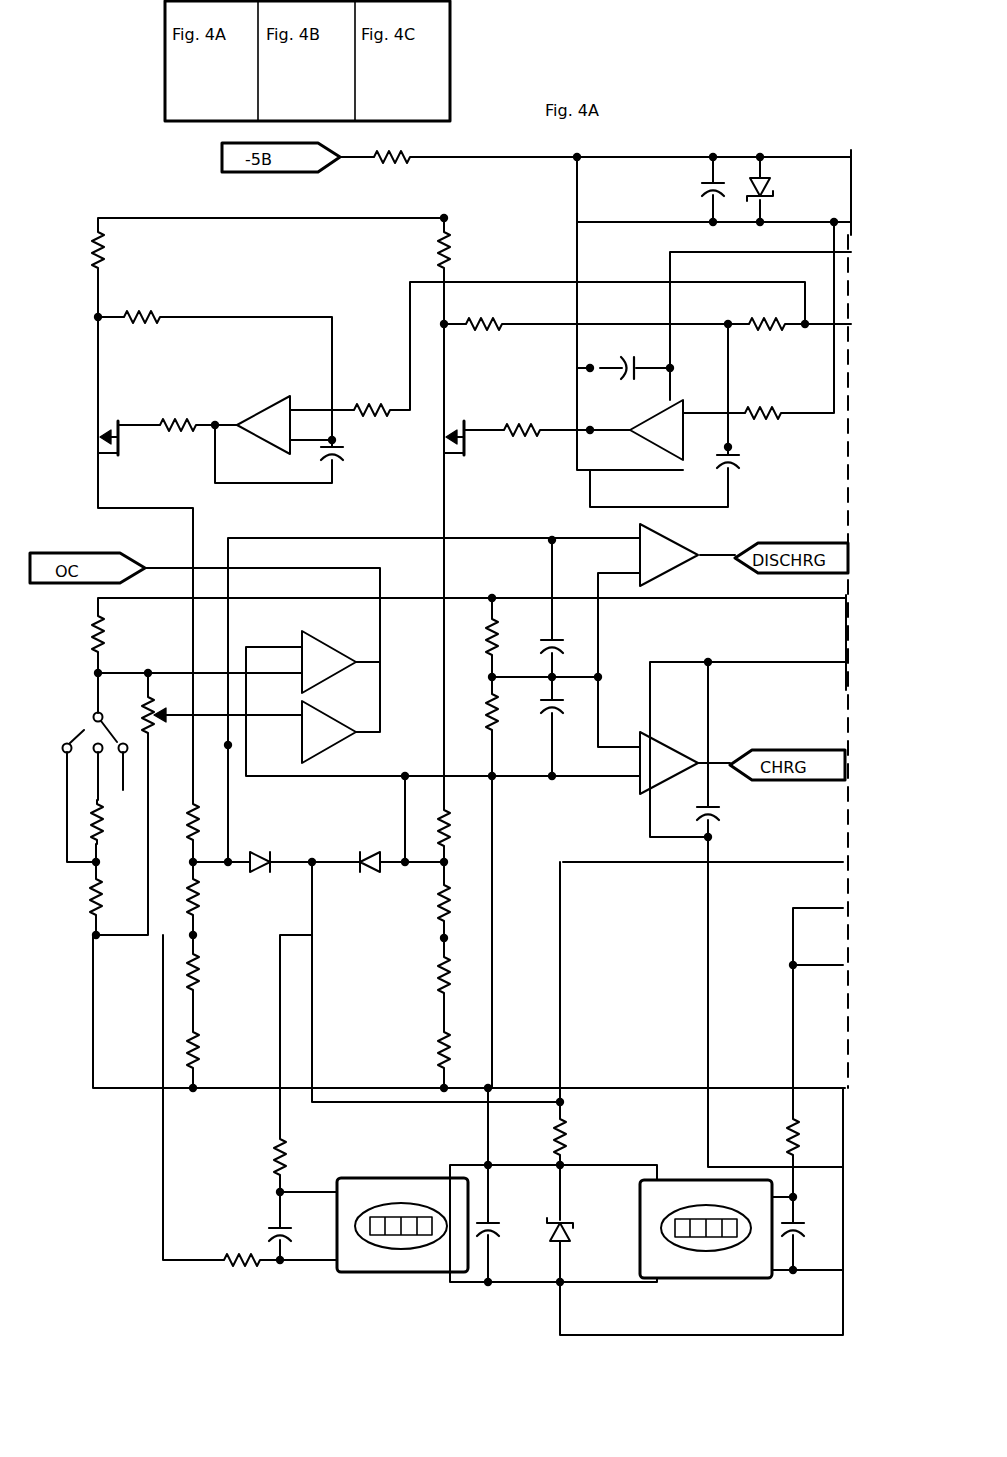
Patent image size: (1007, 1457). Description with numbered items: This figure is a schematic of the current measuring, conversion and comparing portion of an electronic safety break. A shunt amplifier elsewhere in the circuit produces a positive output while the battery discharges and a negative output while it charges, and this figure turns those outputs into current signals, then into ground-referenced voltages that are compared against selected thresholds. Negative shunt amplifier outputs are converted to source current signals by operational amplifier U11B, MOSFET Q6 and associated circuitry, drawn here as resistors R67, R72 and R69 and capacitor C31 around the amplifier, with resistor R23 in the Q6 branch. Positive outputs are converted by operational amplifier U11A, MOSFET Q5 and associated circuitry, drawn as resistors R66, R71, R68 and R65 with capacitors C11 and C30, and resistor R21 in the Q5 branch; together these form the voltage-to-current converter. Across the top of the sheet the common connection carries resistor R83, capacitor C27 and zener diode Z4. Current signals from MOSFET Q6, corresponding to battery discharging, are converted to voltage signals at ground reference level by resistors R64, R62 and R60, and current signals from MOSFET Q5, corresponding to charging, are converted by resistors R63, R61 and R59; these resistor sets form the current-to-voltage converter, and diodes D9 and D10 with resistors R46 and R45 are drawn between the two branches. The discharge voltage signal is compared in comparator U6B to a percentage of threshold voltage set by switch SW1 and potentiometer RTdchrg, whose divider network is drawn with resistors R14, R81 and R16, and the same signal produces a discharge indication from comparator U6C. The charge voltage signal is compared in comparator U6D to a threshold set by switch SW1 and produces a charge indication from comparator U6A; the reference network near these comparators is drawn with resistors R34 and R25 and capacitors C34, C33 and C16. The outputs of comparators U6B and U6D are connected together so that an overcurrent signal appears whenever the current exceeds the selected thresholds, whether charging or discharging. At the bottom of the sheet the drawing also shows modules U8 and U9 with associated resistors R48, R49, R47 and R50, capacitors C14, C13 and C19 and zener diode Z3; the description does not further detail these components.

The resistor R83 10 ohm R83 is at (392, 182).
The capacitor C27 100nF C27 is at (677, 193).
The zener diode Z4 5.1V Z4 is at (779, 191).
The resistor R23 100 ohm R23 is at (120, 250).
The resistor R21 100 ohm R21 is at (464, 250).
The resistor R67 100K R67 is at (141, 321).
The resistor R66 100K R66 is at (484, 326).
The resistor R65 100K R65 is at (765, 326).
The capacitor C11 100nF C11 is at (620, 371).
The operational amplifier U11B is at (261, 400).
The resistor R72 10K R72 is at (178, 404).
The resistor R69 108K R69 is at (372, 409).
The resistor R71 10K R71 is at (522, 407).
The resistor R68 100K R68 is at (764, 415).
The MOSFET Q6 is at (134, 453).
The MOSFET Q5 is at (478, 453).
The capacitor C31 10nF C31 is at (349, 483).
The operational amplifier U11A is at (641, 448).
The capacitor C30 10nF C30 is at (752, 479).
The comparator U6C is at (634, 550).
The resistor R14 10K R14 is at (78, 634).
The potentiometer RTdchrg is at (150, 670).
The comparator U6D is at (292, 648).
The resistor R34 100K R34 is at (470, 636).
The capacitor C34 100nF C34 is at (531, 641).
The resistor R25 100 ohm R25 is at (473, 709).
The capacitor C33 100nF C33 is at (528, 725).
The comparator U6B is at (365, 732).
The switch SW1 is at (88, 719).
The resistor R81 20K R81 is at (113, 828).
The resistor R46 1K R46 is at (177, 819).
The diode D9 1N4148 D9 is at (259, 836).
The diode D10 1N4148 D10 is at (349, 836).
The resistor R45 1K R45 is at (459, 828).
The comparator U6A is at (636, 780).
The capacitor C16 100nF C16 is at (734, 813).
The resistor R16 10K R16 is at (77, 898).
The resistor R64 is at (234, 898).
The resistor R63 is at (408, 903).
The resistor R62 is at (211, 972).
The resistor R61 is at (417, 973).
The resistor R60 is at (209, 1048).
The resistor R59 is at (417, 1048).
The resistor R48 1K R48 is at (260, 1157).
The resistor R47 1K R47 is at (579, 1138).
The resistor R50 1K R50 is at (773, 1136).
The capacitor C14 100nF C14 is at (249, 1218).
The resistor R49 1K R49 is at (242, 1284).
The capacitor C13 100nF C13 is at (510, 1209).
The zener diode Z3 5.1V Z3 is at (578, 1248).
The capacitor C19 10nF C19 is at (807, 1234).
The DVM module U8 (AMPS) U8 is at (402, 1227).
The DVM module U9 (VOLTS) U9 is at (706, 1244).